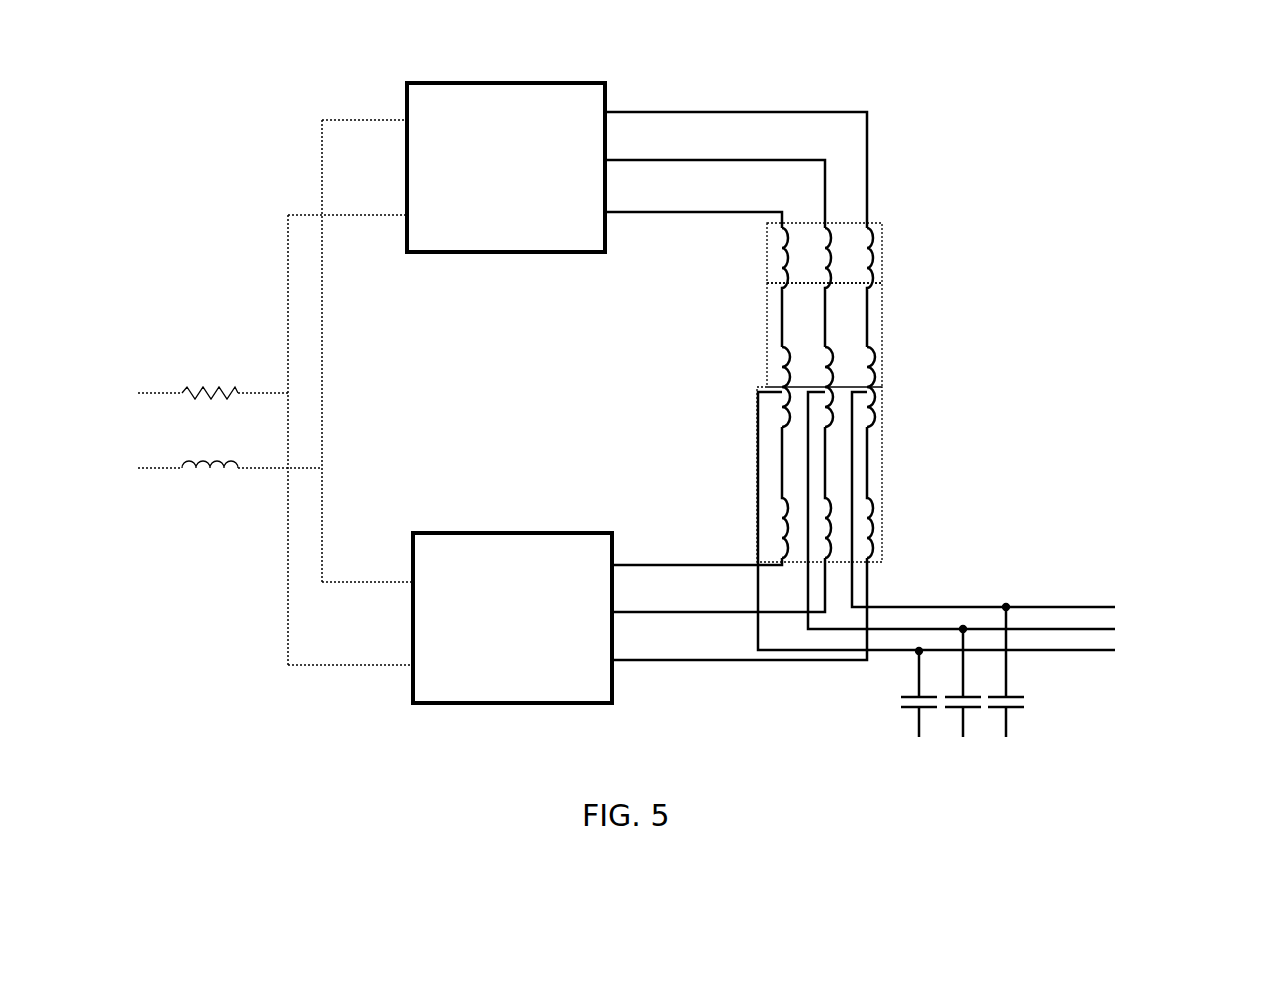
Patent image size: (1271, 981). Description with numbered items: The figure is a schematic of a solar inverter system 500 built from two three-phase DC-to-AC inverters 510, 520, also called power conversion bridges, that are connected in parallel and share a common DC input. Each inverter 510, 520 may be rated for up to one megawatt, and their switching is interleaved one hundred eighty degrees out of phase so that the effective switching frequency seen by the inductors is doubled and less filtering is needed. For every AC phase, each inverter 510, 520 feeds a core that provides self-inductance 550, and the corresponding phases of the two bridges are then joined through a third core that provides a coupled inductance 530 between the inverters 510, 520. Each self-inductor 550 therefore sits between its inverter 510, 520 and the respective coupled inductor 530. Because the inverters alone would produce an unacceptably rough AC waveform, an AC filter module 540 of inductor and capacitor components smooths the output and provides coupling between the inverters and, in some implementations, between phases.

The solar inverter system 500 is at (978, 80).
The inverter 510 is at (440, 78).
The inverter 520 is at (495, 530).
The coupled inductor 530 is at (1110, 405).
The AC filter module 540 is at (1070, 738).
The self-inductance 550 is at (1075, 205).